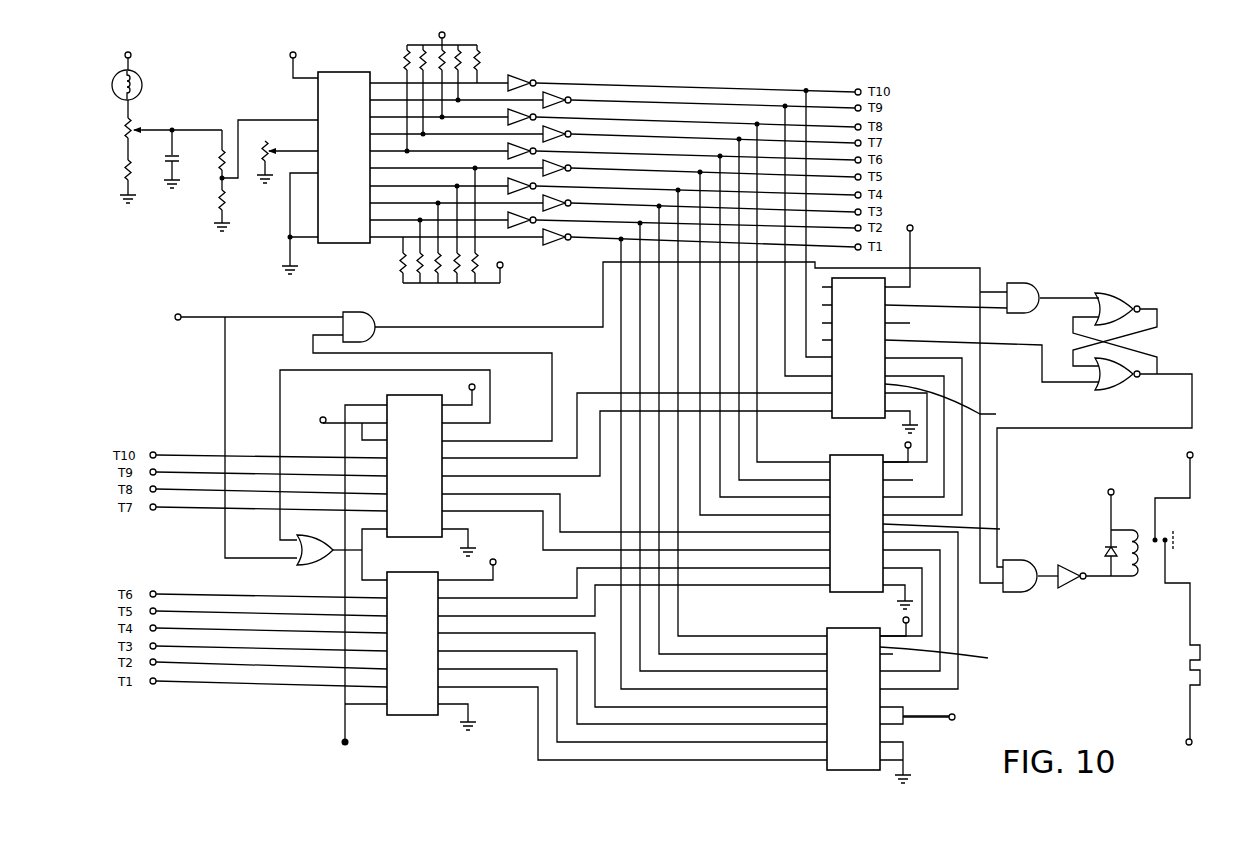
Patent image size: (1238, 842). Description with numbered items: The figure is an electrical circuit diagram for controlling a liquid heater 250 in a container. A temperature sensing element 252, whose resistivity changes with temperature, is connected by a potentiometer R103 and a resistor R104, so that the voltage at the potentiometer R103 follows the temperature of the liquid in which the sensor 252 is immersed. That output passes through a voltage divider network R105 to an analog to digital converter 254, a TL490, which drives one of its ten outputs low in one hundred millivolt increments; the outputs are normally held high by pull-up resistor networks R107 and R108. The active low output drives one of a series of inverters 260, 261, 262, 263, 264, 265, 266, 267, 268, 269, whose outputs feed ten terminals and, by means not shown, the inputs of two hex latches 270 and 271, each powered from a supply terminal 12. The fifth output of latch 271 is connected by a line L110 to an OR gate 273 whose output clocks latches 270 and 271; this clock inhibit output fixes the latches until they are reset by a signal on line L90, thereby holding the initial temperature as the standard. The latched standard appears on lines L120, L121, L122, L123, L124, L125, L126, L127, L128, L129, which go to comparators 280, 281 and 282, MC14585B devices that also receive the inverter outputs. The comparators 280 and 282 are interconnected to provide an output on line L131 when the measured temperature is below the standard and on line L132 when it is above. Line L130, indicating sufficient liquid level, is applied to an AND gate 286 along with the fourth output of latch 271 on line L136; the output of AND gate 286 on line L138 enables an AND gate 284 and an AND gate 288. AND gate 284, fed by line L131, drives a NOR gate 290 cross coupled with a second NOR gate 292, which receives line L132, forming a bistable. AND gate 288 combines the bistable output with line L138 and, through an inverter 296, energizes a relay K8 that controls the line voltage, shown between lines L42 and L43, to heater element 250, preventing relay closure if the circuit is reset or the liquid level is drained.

The supply voltage terminal 12 is at (131, 53).
The temperature sensing element 252 is at (142, 92).
The potentiometer R103 is at (126, 121).
The resistor R104 is at (126, 160).
The voltage divider network R105 is at (220, 182).
The analog to digital converter 254 is at (322, 72).
The pull-up resistor network R107 is at (487, 67).
The pull-up resistor network R108 is at (397, 249).
The inverter 260 is at (527, 78).
The inverter 261 is at (575, 100).
The inverter 262 is at (507, 114).
The inverter 263 is at (575, 134).
The inverter 264 is at (506, 150).
The inverter 265 is at (575, 168).
The inverter 266 is at (533, 190).
The inverter 267 is at (558, 212).
The inverter 268 is at (522, 228).
The inverter 269 is at (557, 246).
The line L130 is at (205, 287).
The AND gate 286 is at (364, 312).
The line L136 is at (487, 354).
The line L138 is at (486, 327).
The OR gate 273 is at (333, 535).
The line L110 is at (490, 412).
The hex latch 271 is at (400, 395).
The hex latch 270 is at (433, 572).
The line L90 is at (342, 708).
The line L129 is at (478, 462).
The line L128 is at (480, 480).
The line L127 is at (481, 498).
The line L126 is at (480, 516).
The line L125 is at (498, 602).
The line L124 is at (503, 619).
The line L123 is at (508, 636).
The line L122 is at (493, 654).
The line L121 is at (490, 672).
The line L120 is at (478, 690).
The comparator 282 is at (872, 278).
The line L131 is at (958, 306).
The line L132 is at (966, 345).
The comparator 281 is at (852, 455).
The comparator 280 is at (848, 628).
The AND gate 284 is at (1038, 272).
The NOR gate 290 is at (1099, 296).
The NOR gate 292 is at (1100, 389).
The AND gate 288 is at (1025, 592).
The inverter 296 is at (1070, 588).
The relay K8 is at (1156, 553).
The line L42 is at (1193, 453).
The liquid heater 250 is at (1216, 633).
The line L43 is at (1193, 740).